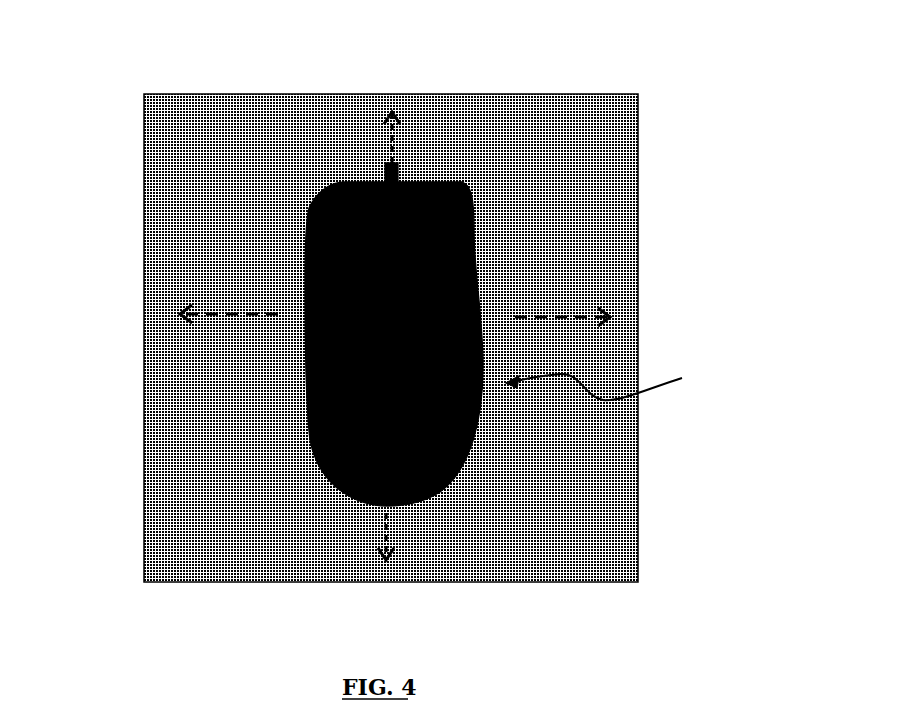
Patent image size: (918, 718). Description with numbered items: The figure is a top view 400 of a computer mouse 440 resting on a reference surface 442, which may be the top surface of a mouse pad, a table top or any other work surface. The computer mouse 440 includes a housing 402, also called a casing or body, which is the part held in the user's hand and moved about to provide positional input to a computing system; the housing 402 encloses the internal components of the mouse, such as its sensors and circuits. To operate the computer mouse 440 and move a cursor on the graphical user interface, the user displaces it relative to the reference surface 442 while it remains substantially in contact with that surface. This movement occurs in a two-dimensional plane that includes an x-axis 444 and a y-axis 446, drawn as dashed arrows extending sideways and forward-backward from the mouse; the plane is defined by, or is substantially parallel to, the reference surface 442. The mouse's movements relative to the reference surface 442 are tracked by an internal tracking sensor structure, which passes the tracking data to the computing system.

The top view 400 is at (413, 321).
The housing 402 is at (460, 280).
The computer mouse 440 is at (619, 382).
The reference surface 442 is at (144, 173).
The x-axis 444 is at (215, 323).
The y-axis 446 is at (397, 140).